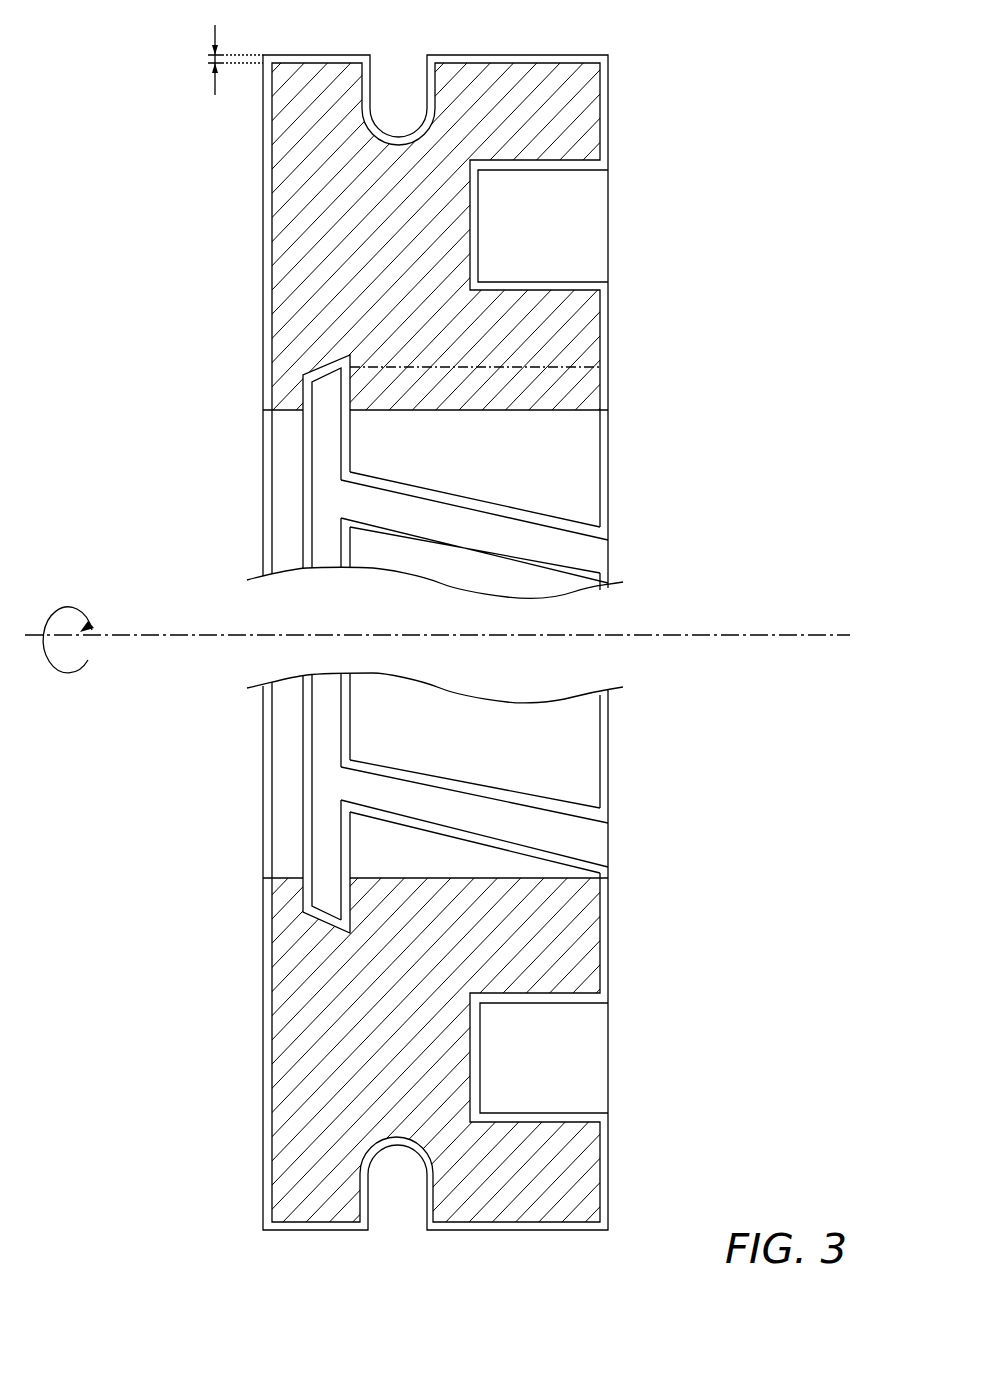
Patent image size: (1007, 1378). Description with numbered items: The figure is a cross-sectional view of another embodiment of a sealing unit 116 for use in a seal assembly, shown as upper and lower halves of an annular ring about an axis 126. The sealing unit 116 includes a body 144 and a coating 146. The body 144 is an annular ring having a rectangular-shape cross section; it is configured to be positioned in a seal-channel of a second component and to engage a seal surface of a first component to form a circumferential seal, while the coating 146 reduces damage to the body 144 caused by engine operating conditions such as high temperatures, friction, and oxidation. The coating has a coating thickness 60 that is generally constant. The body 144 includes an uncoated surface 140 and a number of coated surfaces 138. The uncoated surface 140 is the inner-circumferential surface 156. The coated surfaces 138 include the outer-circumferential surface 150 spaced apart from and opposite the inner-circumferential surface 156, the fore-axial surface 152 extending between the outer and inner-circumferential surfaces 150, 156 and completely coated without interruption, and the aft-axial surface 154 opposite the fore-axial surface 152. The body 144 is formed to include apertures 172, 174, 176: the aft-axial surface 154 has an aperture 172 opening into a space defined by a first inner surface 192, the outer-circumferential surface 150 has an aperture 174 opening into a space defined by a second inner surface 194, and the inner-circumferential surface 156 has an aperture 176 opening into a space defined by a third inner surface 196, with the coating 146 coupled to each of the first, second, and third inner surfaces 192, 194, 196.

The coating thickness 60 is at (215, 28).
The sealing unit 116 is at (178, 112).
The axis of rotation 126 is at (168, 633).
The coated surfaces 138 is at (350, 357).
The uncoated surface 140 is at (473, 470).
The body 144 is at (282, 232).
The coating 146 is at (262, 146).
The outer-circumferential surface 150 is at (507, 63).
The fore-axial surface 152 is at (272, 195).
The aft-axial surface 154 is at (608, 335).
The inner-circumferential surface 156 is at (378, 411).
The aperture 172 is at (546, 203).
The aperture 174 is at (379, 64).
The aperture 176 is at (327, 430).
The first inner surface 192 is at (610, 274).
The second inner surface 194 is at (430, 90).
The third inner surface 196 is at (320, 388).